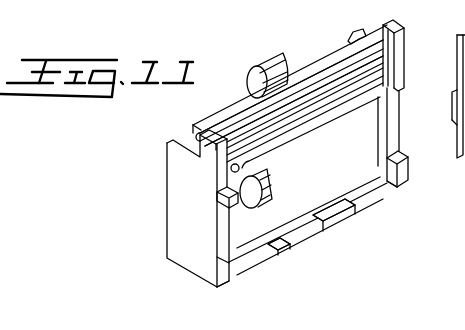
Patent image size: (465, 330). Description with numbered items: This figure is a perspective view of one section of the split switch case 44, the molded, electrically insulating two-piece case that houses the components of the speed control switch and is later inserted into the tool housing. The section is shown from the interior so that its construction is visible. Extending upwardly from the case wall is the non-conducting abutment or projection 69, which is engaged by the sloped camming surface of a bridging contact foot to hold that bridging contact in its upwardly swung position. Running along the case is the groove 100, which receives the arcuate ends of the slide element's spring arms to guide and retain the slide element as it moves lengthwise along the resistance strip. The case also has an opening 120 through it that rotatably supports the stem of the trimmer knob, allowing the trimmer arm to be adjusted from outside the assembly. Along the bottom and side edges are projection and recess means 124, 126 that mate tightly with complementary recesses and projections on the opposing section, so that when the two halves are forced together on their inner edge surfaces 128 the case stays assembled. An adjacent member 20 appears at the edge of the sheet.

The adjacent frame member 20 is at (426, 182).
The switch case 44 is at (166, 222).
The abutment or projection 69 is at (270, 64).
The groove 100 is at (393, 55).
The opening 120 is at (272, 198).
The projection means 124 is at (238, 236).
The recess means 126 is at (390, 122).
The inner edge surfaces 128 is at (241, 280).